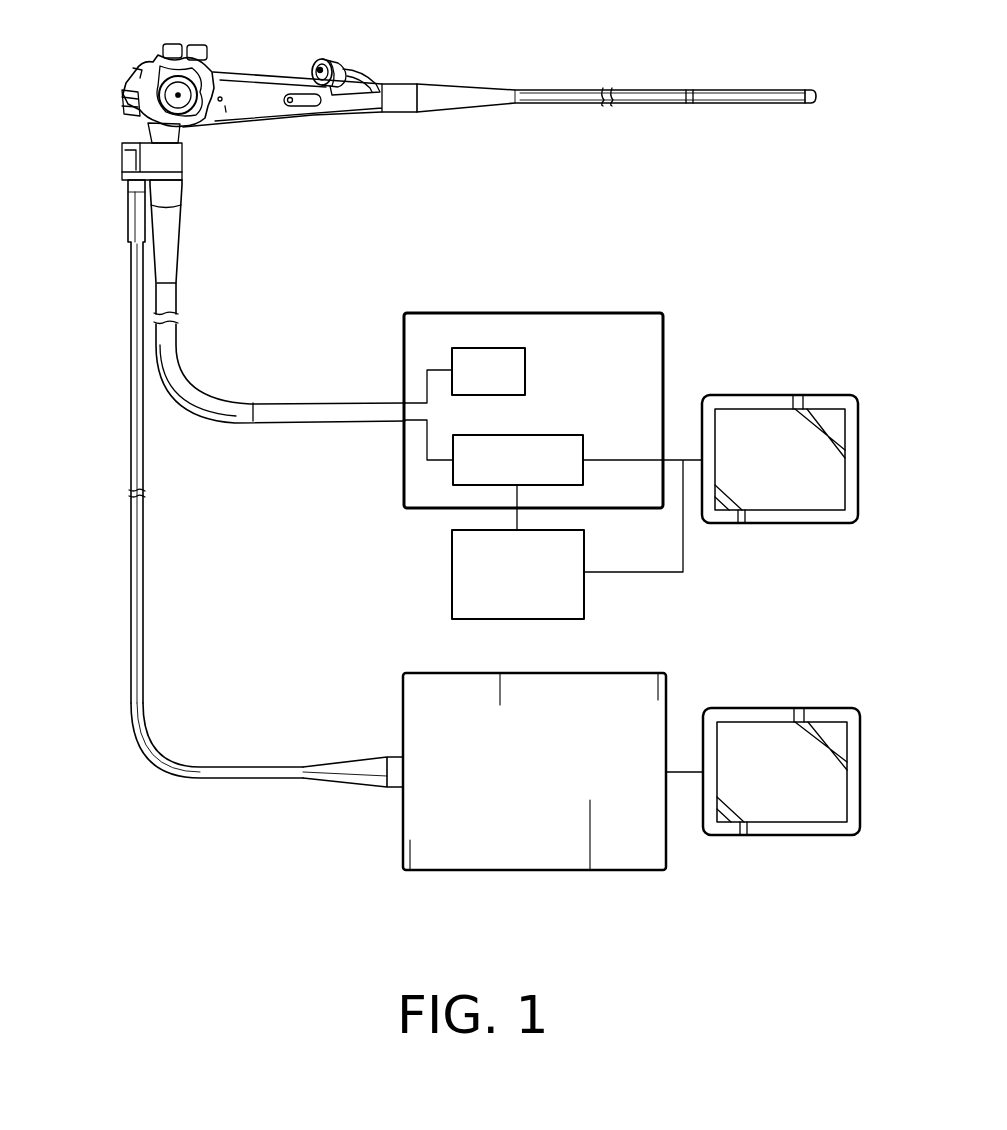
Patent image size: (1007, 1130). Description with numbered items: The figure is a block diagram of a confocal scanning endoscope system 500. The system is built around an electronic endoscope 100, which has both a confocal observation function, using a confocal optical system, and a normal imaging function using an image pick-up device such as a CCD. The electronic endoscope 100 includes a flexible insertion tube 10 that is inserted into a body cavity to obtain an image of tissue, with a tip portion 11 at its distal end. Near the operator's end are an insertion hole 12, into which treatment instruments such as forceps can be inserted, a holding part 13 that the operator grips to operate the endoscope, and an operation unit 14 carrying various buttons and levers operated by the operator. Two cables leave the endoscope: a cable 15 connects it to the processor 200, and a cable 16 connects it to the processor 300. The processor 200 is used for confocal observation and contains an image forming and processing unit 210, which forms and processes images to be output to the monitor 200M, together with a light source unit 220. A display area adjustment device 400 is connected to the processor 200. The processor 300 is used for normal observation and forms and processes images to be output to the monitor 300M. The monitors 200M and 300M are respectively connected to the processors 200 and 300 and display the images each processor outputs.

The flexible insertion tube 10 is at (575, 88).
The tip portion 11 is at (814, 97).
The insertion hole 12 is at (340, 67).
The holding part 13 is at (258, 103).
The operation unit 14 is at (155, 63).
The cable 15 is at (216, 361).
The cable 16 is at (131, 466).
The electronic endoscope 100 is at (112, 519).
The processor 200 is at (637, 284).
The image forming and processing unit 210 is at (583, 412).
The light source unit 220 is at (527, 358).
The monitor 200M is at (822, 362).
The processor 300 is at (640, 643).
The monitor 300M is at (823, 672).
The display area adjustment device 400 is at (452, 584).
The confocal scanning endoscope system 500 is at (232, 795).